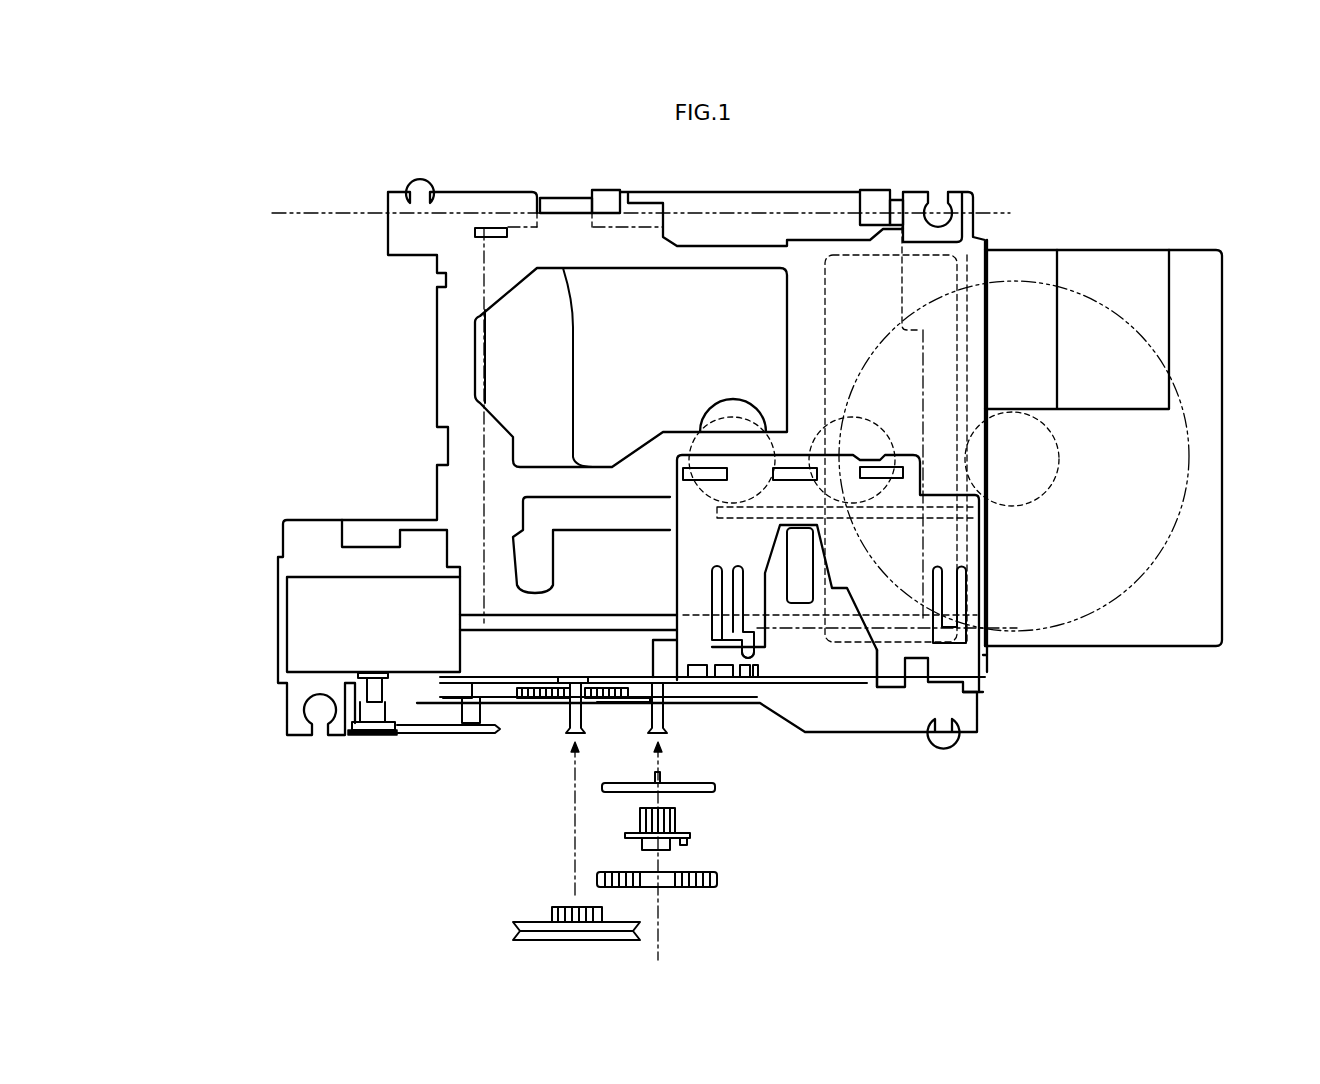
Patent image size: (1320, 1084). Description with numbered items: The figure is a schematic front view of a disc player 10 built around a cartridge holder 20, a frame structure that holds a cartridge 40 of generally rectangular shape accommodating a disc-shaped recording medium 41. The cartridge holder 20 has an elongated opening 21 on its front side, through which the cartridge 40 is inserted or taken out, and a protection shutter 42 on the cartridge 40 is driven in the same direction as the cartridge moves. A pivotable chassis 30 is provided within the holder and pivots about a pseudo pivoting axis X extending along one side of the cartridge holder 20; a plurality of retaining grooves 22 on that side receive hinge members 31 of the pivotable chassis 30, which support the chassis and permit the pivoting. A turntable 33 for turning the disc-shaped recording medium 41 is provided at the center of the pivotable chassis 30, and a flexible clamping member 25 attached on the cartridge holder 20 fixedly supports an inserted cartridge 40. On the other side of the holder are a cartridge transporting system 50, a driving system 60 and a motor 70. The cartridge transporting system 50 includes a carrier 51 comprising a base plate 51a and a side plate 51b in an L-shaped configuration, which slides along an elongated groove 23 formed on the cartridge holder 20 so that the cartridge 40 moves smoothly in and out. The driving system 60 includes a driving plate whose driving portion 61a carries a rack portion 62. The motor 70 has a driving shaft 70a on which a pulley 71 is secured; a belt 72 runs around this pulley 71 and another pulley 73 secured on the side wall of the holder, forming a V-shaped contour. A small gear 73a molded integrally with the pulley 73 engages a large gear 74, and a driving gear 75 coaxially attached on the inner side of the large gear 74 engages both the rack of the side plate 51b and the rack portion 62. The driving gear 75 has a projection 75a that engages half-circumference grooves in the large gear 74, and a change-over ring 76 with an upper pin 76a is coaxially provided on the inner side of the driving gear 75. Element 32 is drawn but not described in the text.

The disc player 10 is at (212, 212).
The cartridge holder 20 is at (445, 367).
The elongated opening 21 is at (987, 572).
The retaining grooves 22 is at (560, 198).
The elongated groove 23 is at (810, 620).
The flexible clamping member 25 is at (962, 519).
The pivotable chassis 30 is at (478, 449).
The hinge members 31 is at (578, 202).
The lens holder claw 32 is at (748, 655).
The turntable 33 is at (737, 418).
The cartridge 40 is at (1211, 285).
The disc-shaped recording medium 41 is at (1189, 431).
The protection shutter 42 is at (1025, 265).
The cartridge transporting system 50 is at (985, 689).
The carrier 51 is at (975, 661).
The base plate 51a is at (910, 462).
The side plate 51b is at (885, 690).
The driving system 60 is at (533, 700).
The driving portion 61a is at (553, 700).
The rack portion 62 is at (605, 703).
The motor 70 is at (302, 633).
The driving shaft 70a is at (362, 690).
The pulley 71 is at (370, 708).
The belt 72 is at (405, 728).
The pulley 73 is at (535, 925).
The small gear 73a is at (552, 907).
The large gear 74 is at (717, 880).
The driving gear 75 is at (680, 818).
The projection 75a is at (690, 842).
The change-over ring 76 is at (715, 787).
The upper pin 76a is at (663, 776).